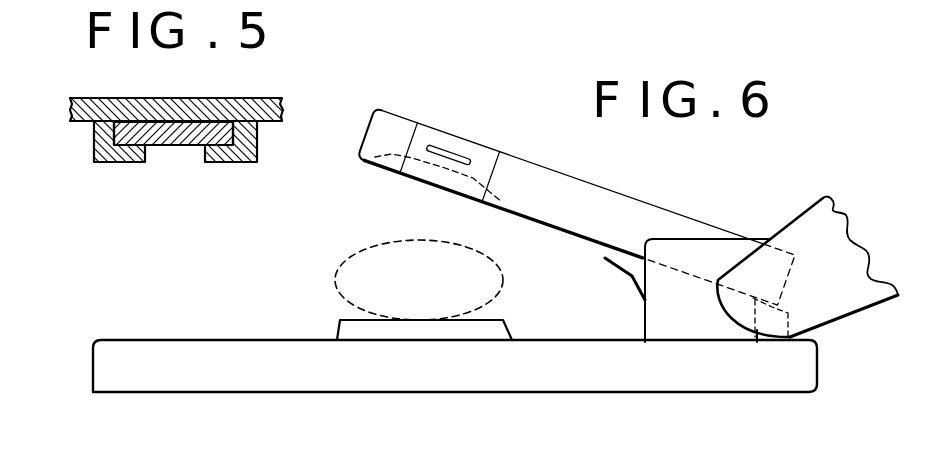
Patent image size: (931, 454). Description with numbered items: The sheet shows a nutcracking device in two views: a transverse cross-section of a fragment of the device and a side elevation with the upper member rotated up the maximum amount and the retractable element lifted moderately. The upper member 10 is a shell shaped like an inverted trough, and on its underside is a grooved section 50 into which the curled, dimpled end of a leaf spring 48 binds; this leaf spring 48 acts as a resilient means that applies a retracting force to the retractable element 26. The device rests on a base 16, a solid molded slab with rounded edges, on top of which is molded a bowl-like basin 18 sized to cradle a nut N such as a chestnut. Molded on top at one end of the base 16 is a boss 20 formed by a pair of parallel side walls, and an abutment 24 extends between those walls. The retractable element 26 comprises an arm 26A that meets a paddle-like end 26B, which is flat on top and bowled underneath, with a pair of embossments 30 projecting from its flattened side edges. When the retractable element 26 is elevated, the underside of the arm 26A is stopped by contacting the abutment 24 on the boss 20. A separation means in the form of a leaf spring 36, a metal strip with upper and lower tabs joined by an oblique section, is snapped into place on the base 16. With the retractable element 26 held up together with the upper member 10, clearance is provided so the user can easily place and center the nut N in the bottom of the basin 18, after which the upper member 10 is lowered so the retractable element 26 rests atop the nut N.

In FIG. 5, the upper member 10 is at (117, 98).
In FIG. 6, the upper member 10 is at (798, 217).
In FIG. 5, the leaf spring 48 is at (184, 146).
In FIG. 5, the grooved section 50 is at (127, 163).
In FIG. 6, the base 16 is at (261, 384).
In FIG. 6, the basin 18 is at (337, 338).
In FIG. 6, the nut N is at (434, 240).
In FIG. 6, the boss 20 is at (680, 326).
In FIG. 6, the leaf spring 36 is at (630, 278).
In FIG. 6, the retractable element 26 is at (600, 189).
In FIG. 6, the paddle-like end 26B is at (428, 50).
In FIG. 6, the embossments 30 is at (440, 147).
In FIG. 6, the arm 26A is at (783, 176).
In FIG. 6, the abutment 24 is at (808, 334).